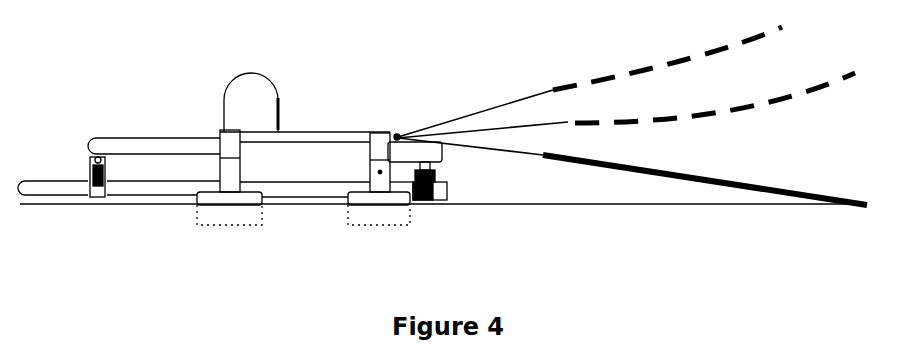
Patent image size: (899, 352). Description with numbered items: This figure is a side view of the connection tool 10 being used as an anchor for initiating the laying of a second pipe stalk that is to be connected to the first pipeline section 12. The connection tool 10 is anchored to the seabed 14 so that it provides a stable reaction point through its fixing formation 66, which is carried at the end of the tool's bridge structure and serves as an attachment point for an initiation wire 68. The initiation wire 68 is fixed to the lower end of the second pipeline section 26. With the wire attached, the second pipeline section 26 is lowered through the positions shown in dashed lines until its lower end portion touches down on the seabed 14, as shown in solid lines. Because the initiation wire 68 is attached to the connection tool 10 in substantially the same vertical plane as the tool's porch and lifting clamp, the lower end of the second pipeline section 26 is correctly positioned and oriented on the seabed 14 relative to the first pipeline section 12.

The connection tool 10 is at (163, 97).
The first pipeline section 12 is at (58, 188).
The seabed 14 is at (573, 205).
The second pipeline section 26 is at (735, 185).
The fixing formation 66 is at (396, 134).
The initiation wire 68 is at (498, 105).